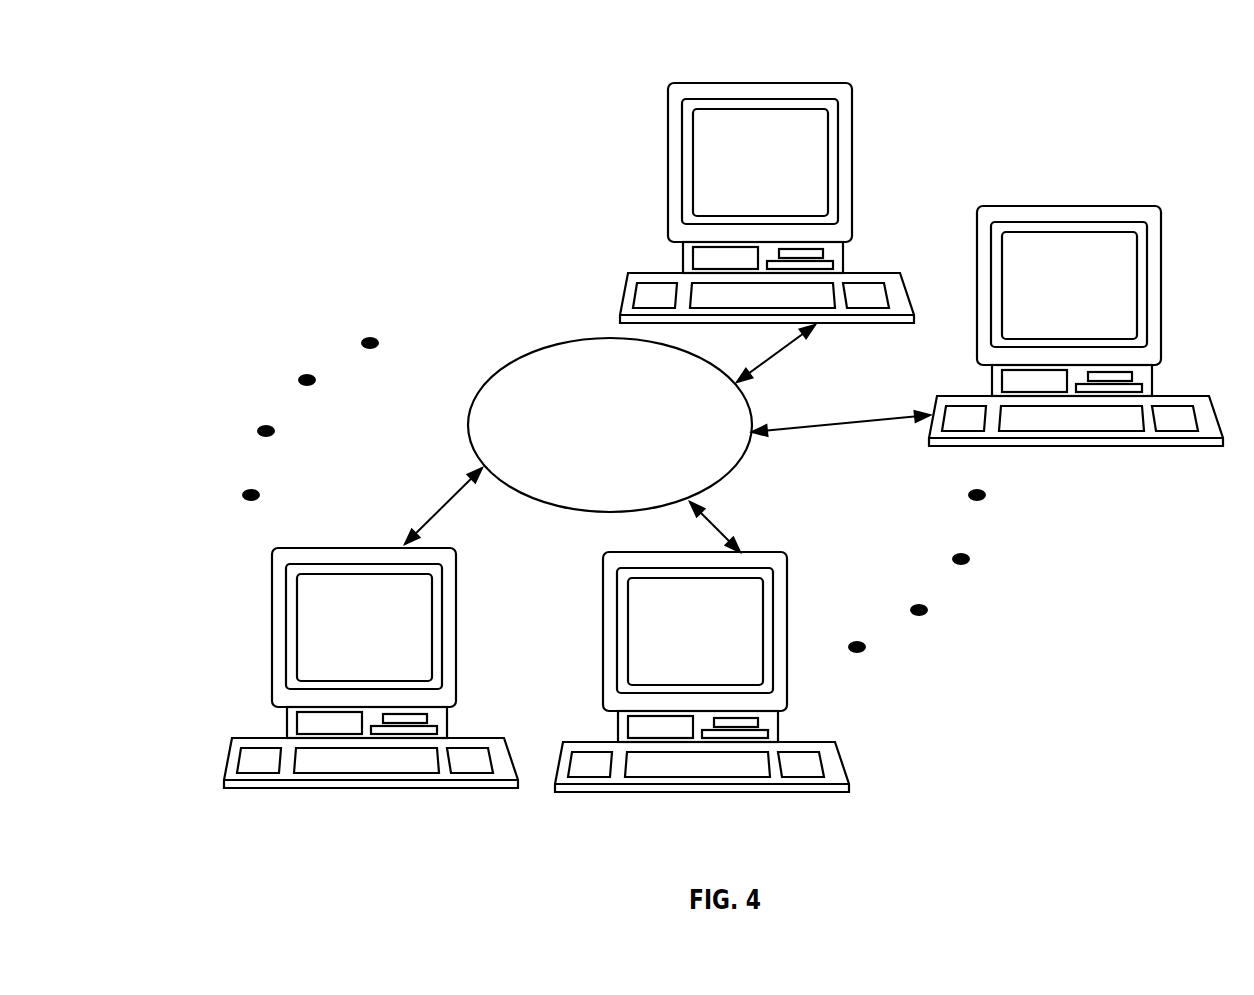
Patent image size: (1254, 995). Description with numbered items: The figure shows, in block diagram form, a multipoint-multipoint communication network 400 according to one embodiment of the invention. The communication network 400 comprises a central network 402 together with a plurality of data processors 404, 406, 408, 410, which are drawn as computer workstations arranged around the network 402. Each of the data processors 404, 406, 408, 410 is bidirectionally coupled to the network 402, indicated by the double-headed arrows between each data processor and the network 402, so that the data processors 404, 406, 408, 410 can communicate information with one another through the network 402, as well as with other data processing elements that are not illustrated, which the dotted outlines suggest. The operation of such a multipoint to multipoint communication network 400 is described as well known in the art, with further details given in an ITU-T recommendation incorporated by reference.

The multipoint-multipoint communication network 400 is at (288, 282).
The network 402 is at (485, 375).
The data processor 404 is at (852, 115).
The data processor 406 is at (1162, 243).
The data processor 408 is at (787, 605).
The data processor 410 is at (272, 598).